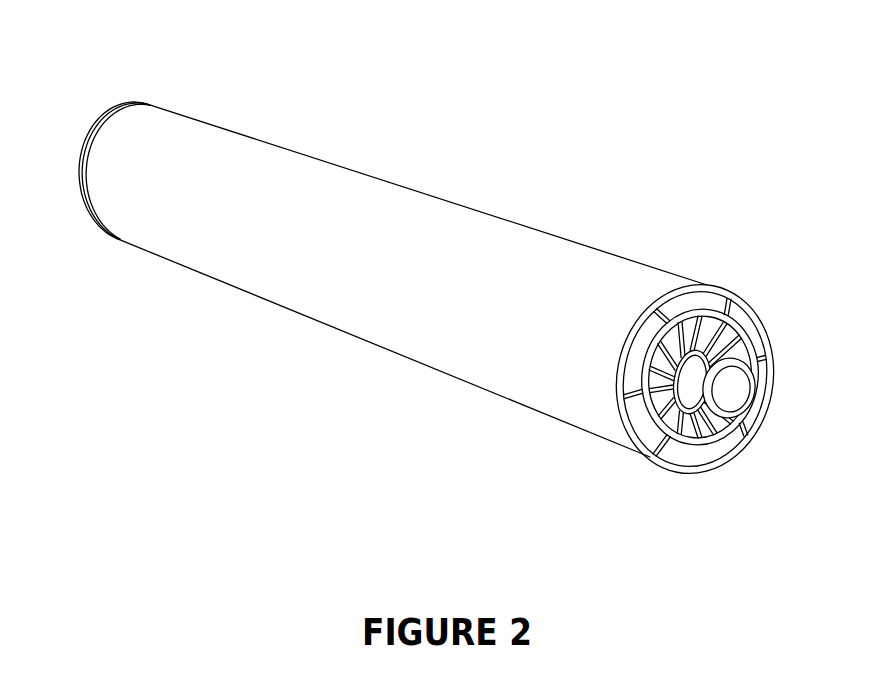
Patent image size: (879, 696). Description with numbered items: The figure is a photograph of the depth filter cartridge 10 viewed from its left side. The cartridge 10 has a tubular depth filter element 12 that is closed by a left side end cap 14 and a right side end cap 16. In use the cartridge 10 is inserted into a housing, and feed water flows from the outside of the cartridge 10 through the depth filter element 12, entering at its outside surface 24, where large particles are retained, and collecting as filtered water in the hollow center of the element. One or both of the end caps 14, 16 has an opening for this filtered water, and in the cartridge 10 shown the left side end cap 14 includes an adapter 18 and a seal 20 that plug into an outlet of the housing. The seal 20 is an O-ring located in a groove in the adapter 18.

The depth filter cartridge 10 is at (454, 293).
The tubular depth filter element 12 is at (580, 333).
The left side end cap 14 is at (705, 450).
The right side end cap 16 is at (97, 130).
The adapter 18 is at (762, 410).
The seal 20 is at (694, 440).
The outside surface 24 is at (502, 360).